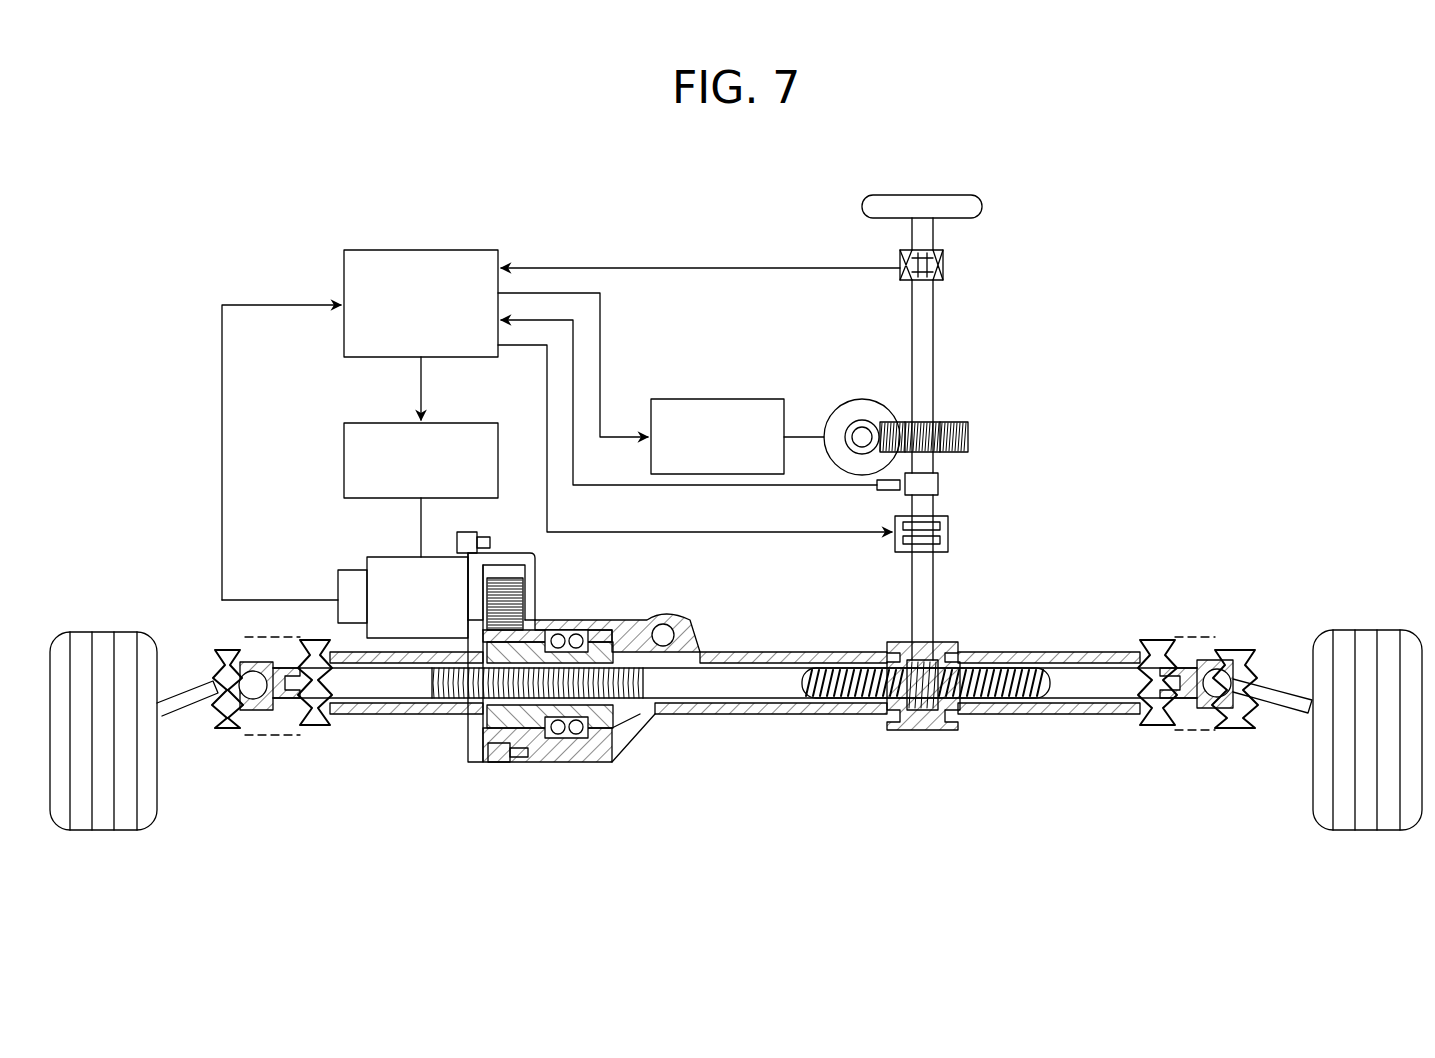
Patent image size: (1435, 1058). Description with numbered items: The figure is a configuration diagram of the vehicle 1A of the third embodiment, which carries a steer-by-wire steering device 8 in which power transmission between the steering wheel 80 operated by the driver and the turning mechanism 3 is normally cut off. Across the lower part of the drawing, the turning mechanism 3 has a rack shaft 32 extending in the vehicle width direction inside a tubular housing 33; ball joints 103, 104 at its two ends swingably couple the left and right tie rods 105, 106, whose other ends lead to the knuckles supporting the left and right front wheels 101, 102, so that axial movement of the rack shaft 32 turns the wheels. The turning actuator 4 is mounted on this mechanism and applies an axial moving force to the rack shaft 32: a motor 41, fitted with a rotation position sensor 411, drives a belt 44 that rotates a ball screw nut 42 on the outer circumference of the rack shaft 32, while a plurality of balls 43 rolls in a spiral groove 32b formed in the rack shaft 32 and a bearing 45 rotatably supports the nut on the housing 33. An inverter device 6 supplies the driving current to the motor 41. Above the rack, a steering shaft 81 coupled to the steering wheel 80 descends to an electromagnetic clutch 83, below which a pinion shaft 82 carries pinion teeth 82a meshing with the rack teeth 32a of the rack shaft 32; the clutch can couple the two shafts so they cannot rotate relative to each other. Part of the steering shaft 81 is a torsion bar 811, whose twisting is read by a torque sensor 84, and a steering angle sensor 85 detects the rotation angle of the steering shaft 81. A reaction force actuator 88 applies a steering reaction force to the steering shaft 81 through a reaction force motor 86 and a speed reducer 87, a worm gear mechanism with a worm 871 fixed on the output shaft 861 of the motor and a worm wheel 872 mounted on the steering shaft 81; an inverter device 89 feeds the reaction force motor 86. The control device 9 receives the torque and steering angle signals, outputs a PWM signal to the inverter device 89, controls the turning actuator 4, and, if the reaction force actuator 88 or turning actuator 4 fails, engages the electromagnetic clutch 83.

The vehicle 1A is at (172, 277).
The turning mechanism 3 is at (1048, 746).
The turning actuator 4 is at (612, 740).
The inverter device 6 is at (352, 423).
The steering device 8 is at (1200, 255).
The control device 9 is at (350, 250).
The rack shaft 32 is at (765, 697).
The rack teeth 32a is at (1040, 668).
The spiral groove 32b is at (640, 700).
The housing 33 is at (1103, 656).
The motor 41 is at (395, 557).
The rotation position sensor 411 is at (352, 572).
The ball screw nut 42 is at (515, 735).
The balls 43 is at (508, 690).
The belt 44 is at (535, 622).
The bearing 45 is at (575, 745).
The steering wheel 80 is at (985, 208).
The steering shaft 81 is at (935, 340).
The torsion bar 811 is at (948, 262).
The pinion shaft 82 is at (935, 600).
The pinion teeth 82a is at (930, 715).
The electromagnetic clutch 83 is at (950, 535).
The torque sensor 84 is at (948, 273).
The steering angle sensor 85 is at (880, 494).
The reaction force motor 86 is at (862, 400).
The output shaft 861 is at (862, 432).
The speed reducer 87 is at (1034, 352).
The worm 871 is at (868, 418).
The worm wheel 872 is at (940, 420).
The reaction force actuator 88 is at (980, 454).
The inverter device 89 is at (718, 399).
The left front wheel 101 is at (105, 630).
The right front wheel 102 is at (1370, 630).
The ball joint 103 is at (268, 708).
The ball joint 104 is at (1215, 706).
The left tie rod 105 is at (190, 705).
The right tie rod 106 is at (1268, 706).